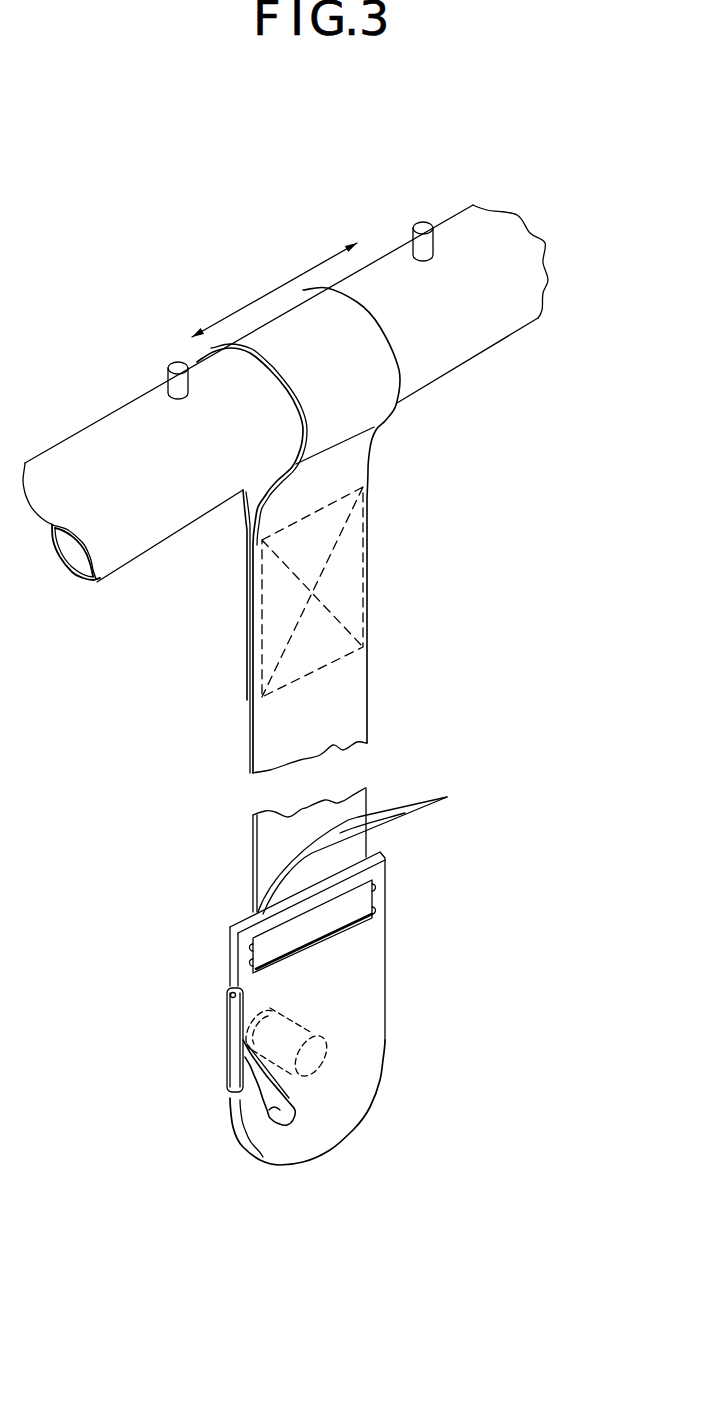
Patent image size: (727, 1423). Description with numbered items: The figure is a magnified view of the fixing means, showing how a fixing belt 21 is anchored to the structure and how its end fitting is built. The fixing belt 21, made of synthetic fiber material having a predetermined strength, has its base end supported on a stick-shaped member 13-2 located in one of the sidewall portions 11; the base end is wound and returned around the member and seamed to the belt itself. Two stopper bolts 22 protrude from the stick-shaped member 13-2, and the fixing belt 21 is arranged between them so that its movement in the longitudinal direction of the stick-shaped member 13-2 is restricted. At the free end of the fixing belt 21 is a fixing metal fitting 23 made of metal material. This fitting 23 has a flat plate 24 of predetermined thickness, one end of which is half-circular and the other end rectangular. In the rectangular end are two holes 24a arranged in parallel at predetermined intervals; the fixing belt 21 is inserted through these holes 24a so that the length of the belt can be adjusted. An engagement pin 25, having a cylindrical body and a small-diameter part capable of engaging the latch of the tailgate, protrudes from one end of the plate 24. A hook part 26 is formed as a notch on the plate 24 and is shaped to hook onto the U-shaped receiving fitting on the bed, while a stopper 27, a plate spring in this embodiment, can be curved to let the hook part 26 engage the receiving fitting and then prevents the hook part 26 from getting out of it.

The sidewall portion 11 is at (128, 510).
The stick-shaped member 13-2 is at (474, 330).
The fixing belt 21 is at (345, 706).
The stopper bolt 22 is at (180, 363).
The fixing metal fitting 23 is at (390, 1033).
The plate 24 is at (362, 980).
The hole 24a is at (383, 888).
The engagement pin 25 is at (324, 1076).
The hook part 26 is at (270, 1117).
The stopper 27 is at (227, 1063).